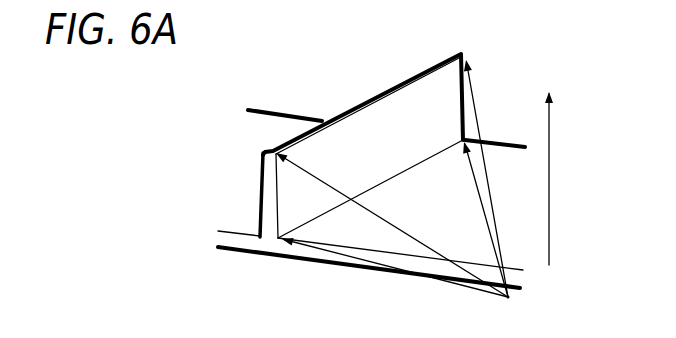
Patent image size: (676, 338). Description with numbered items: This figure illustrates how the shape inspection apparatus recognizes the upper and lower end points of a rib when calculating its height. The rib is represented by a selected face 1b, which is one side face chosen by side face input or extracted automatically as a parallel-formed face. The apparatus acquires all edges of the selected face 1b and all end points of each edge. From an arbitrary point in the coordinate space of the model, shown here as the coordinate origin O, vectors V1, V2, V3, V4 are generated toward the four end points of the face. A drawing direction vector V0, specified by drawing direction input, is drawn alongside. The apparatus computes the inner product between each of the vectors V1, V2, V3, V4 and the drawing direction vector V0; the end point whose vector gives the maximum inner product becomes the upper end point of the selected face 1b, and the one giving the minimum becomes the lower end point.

The selected face 1b is at (398, 107).
The drawing direction vector V0 is at (565, 178).
The vector V1 is at (395, 275).
The vector V2 is at (392, 222).
The vector V3 is at (475, 219).
The vector V4 is at (486, 178).
The coordinate origin O is at (508, 312).